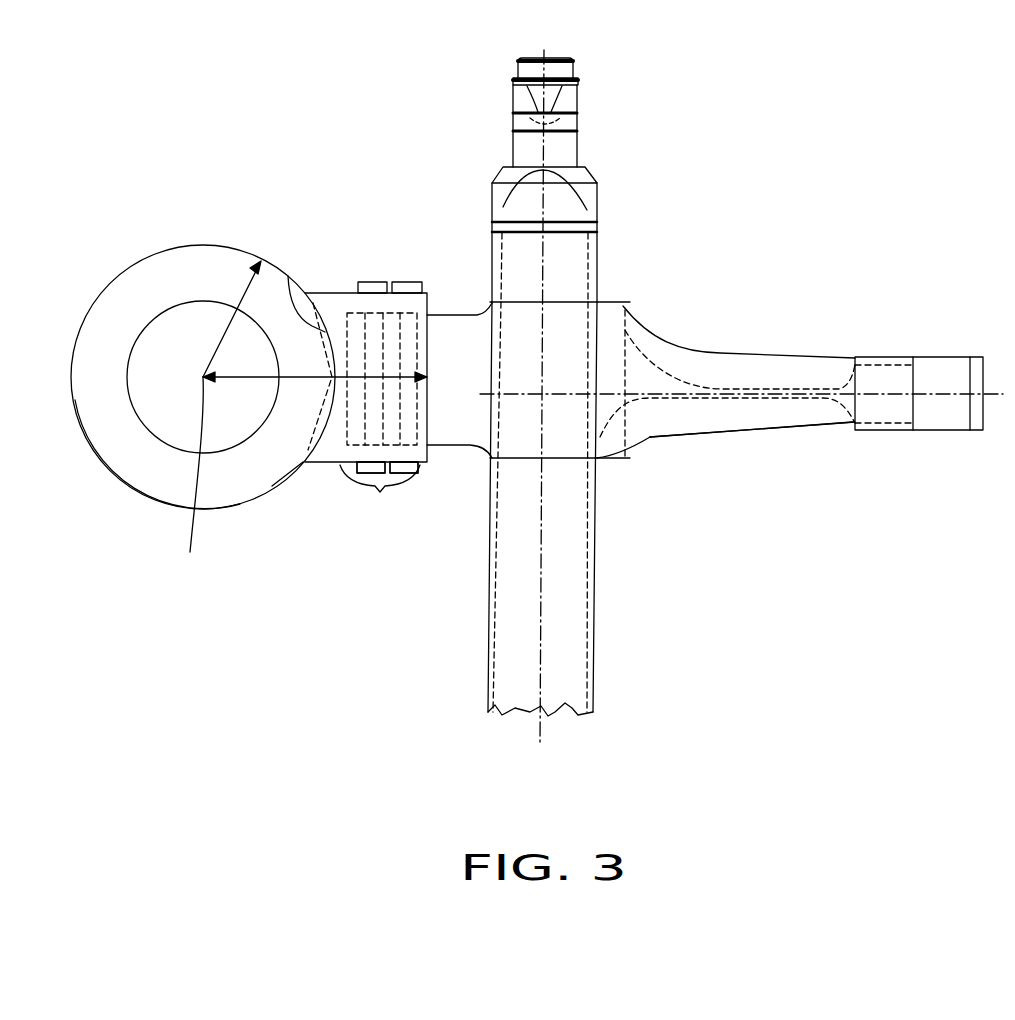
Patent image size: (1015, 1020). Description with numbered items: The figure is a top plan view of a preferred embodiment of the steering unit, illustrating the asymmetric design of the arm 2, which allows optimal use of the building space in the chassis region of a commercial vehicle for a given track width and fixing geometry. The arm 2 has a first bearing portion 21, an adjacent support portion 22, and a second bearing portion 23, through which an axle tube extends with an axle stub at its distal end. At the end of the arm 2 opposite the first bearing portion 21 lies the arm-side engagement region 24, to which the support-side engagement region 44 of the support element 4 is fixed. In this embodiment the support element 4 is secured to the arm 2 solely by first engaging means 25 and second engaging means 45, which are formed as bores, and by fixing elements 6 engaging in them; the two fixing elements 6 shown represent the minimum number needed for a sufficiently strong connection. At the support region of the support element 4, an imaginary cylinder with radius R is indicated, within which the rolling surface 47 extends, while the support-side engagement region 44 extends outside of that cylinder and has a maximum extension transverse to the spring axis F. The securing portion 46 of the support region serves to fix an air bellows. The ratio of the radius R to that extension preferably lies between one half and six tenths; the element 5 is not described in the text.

The arm 2 is at (288, 276).
The support element 4 is at (117, 270).
The diameter line 5 is at (278, 393).
The fixing elements 6 is at (374, 282).
The first bearing portion 21 is at (940, 415).
The support portion 22 is at (770, 370).
The second bearing portion 23 is at (578, 335).
The arm-side engagement region 24 is at (378, 494).
The support-side engagement region 44 is at (387, 467).
The first engaging means 25 is at (417, 412).
The second engaging means 45 is at (362, 303).
The securing portion 46 is at (170, 326).
The rolling surface 47 is at (140, 458).
The radius R is at (230, 247).
The spring axis F is at (190, 486).